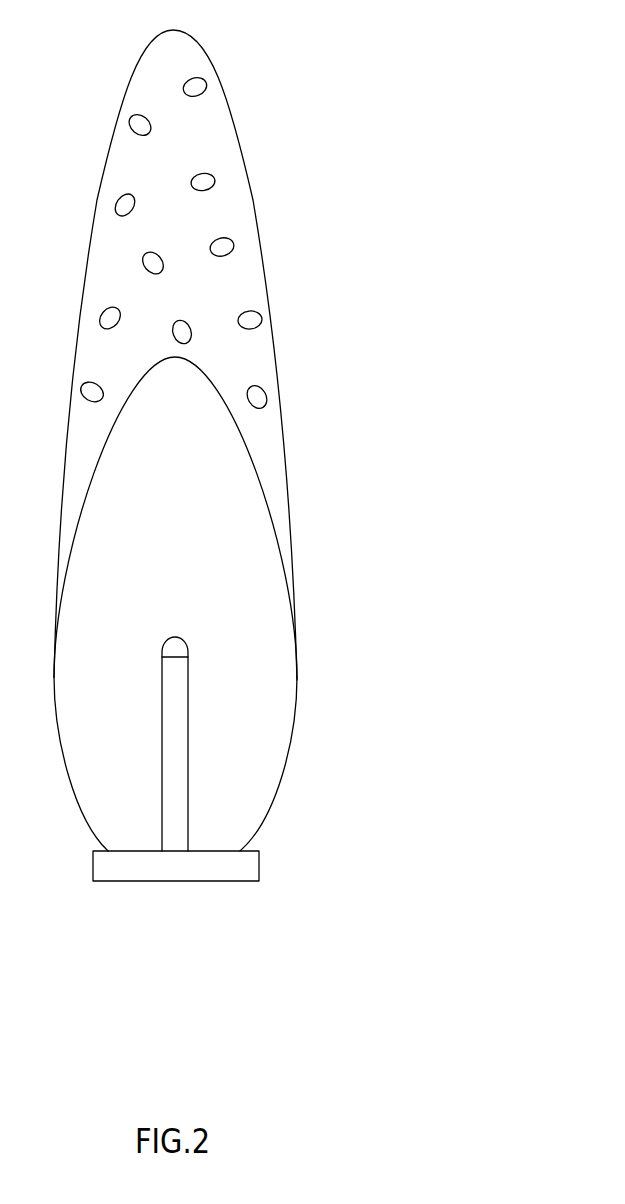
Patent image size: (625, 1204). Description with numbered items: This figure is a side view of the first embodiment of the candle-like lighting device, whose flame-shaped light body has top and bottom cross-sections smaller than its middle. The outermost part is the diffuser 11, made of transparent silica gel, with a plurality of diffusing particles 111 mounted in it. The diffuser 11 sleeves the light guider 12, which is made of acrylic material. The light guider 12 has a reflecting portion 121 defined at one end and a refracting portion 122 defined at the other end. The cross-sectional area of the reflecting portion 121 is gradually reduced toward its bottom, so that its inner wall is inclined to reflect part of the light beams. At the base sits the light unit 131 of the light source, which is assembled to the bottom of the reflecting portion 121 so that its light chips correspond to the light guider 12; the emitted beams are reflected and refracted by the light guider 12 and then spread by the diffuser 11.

The diffuser 11 is at (268, 277).
The diffusing particles 111 is at (215, 178).
The light guider 12 is at (239, 582).
The reflecting portion 121 is at (281, 781).
The refracting portion 122 is at (218, 378).
The light unit 131 is at (260, 872).